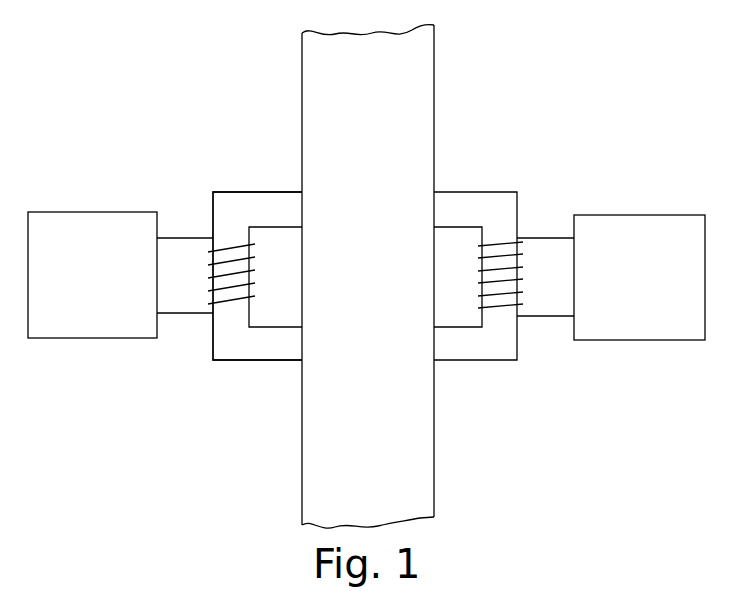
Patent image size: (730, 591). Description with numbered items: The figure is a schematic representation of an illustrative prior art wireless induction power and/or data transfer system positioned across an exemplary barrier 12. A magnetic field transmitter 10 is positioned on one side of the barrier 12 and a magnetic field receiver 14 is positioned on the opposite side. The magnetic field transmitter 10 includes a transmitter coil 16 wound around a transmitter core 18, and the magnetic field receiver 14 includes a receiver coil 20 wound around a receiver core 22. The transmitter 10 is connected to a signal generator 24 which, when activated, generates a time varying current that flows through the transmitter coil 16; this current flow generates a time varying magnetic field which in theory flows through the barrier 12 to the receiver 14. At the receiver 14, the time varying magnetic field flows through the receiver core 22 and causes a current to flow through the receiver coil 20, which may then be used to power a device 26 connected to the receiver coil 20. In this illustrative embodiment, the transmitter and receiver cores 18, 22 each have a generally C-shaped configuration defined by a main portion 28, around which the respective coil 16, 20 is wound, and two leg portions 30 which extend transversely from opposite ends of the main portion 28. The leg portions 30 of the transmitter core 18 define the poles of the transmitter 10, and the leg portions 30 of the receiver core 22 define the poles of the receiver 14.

The magnetic field transmitter 10 is at (202, 165).
The barrier 12 is at (392, 82).
The magnetic field receiver 14 is at (545, 158).
The transmitter coil 16 is at (230, 308).
The transmitter core 18 is at (237, 360).
The receiver coil 20 is at (507, 307).
The receiver core 22 is at (507, 360).
The signal generator 24 is at (106, 291).
The device 26 is at (664, 295).
The main portion 28 is at (213, 212).
The leg portions 30 is at (265, 200).